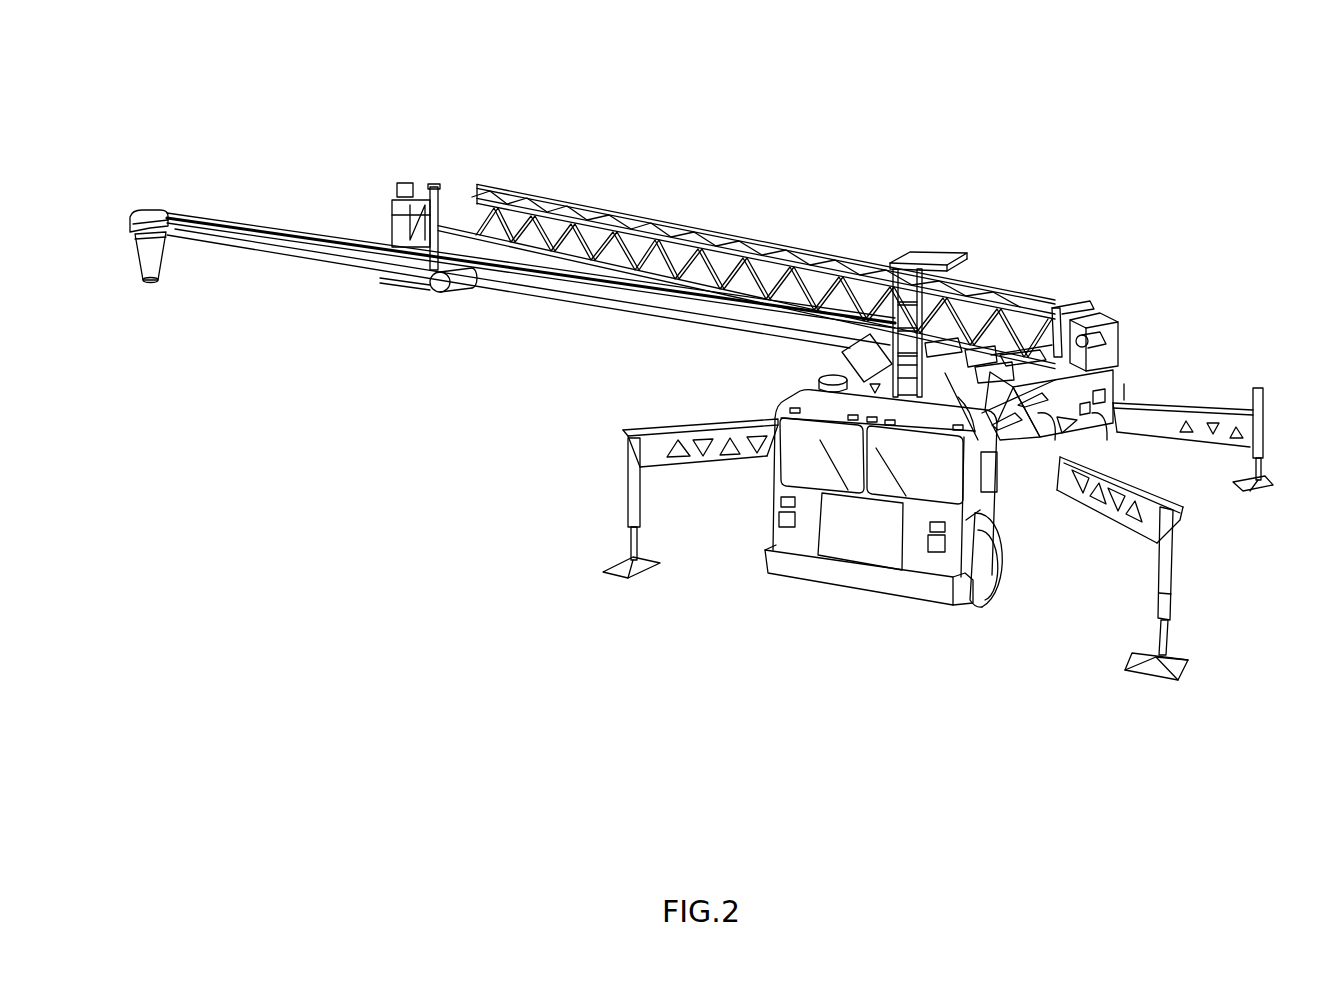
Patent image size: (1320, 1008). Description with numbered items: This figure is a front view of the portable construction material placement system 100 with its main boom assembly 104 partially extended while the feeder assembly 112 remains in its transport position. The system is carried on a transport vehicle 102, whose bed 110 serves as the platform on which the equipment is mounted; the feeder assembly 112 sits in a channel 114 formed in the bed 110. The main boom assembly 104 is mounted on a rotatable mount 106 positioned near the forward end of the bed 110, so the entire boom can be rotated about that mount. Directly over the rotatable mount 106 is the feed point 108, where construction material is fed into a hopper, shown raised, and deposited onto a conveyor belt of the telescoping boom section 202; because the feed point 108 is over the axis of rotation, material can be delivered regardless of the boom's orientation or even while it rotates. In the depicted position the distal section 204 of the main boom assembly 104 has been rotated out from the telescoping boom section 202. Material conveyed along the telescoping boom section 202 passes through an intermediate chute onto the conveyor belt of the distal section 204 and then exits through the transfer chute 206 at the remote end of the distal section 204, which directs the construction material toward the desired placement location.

The portable construction material placement system 100 is at (719, 25).
The transport vehicle 102 is at (887, 593).
The main boom assembly 104 is at (643, 210).
The rotatable mount 106 is at (1012, 497).
The feed point 108 is at (952, 252).
The bed 110 is at (1100, 517).
The feeder assembly 112 is at (1126, 316).
The channel 114 is at (1001, 394).
The telescoping boom section 202 is at (774, 236).
The distal section 204 is at (245, 232).
The transfer chute 206 is at (160, 258).